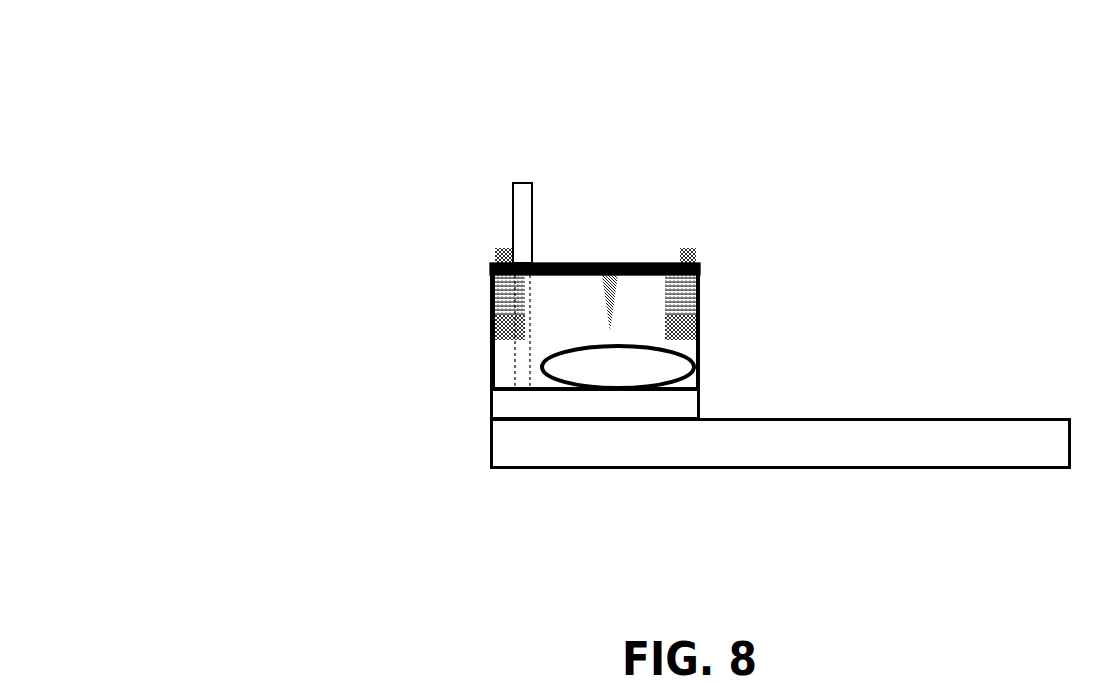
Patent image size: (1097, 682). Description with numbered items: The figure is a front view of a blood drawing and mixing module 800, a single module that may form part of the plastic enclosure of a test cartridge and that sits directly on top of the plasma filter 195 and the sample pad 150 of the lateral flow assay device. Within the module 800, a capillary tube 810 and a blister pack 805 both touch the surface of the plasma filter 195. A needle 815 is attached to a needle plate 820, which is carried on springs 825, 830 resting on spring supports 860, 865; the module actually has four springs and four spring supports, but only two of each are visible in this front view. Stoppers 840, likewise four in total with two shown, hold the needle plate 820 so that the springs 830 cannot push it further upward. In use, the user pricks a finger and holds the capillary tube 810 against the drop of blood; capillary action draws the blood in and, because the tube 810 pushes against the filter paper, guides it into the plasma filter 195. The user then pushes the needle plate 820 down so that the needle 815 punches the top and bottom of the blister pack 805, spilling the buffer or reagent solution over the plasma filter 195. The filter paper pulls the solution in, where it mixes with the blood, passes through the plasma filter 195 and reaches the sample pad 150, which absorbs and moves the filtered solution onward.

The blood drawing and mixing module 800 is at (153, 98).
The capillary tube 810 is at (507, 205).
The stopper 840 is at (492, 250).
The needle 815 is at (617, 262).
The needle plate 820 is at (648, 263).
The spring 830 is at (693, 290).
The spring 825 is at (505, 301).
The spring support 865 is at (693, 330).
The spring support 860 is at (505, 330).
The blister pack 805 is at (684, 366).
The plasma filter pad 195 is at (488, 408).
The sample pad 150 is at (655, 502).